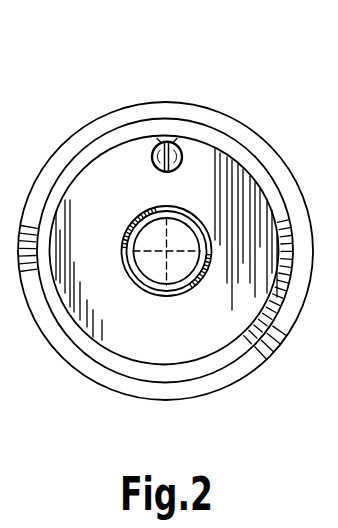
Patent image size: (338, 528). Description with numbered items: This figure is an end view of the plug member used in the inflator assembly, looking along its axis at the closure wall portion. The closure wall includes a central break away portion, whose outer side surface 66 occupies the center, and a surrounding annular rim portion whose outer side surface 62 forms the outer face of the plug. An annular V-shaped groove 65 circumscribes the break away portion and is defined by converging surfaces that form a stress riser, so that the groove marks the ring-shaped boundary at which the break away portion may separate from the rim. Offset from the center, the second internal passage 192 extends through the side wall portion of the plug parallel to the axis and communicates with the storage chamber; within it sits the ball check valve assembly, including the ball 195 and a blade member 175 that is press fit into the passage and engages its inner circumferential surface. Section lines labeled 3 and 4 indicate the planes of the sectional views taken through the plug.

The outer side surface 62 is at (97, 208).
The annular V-shaped groove 65 is at (134, 279).
The outer side surface 66 is at (150, 241).
The blade member 175 is at (163, 168).
The second internal passage 192 is at (160, 140).
The ball 195 is at (177, 145).
The section line for FIG. 3 is at (72, 130).
The section line for FIG. 4 is at (167, 95).